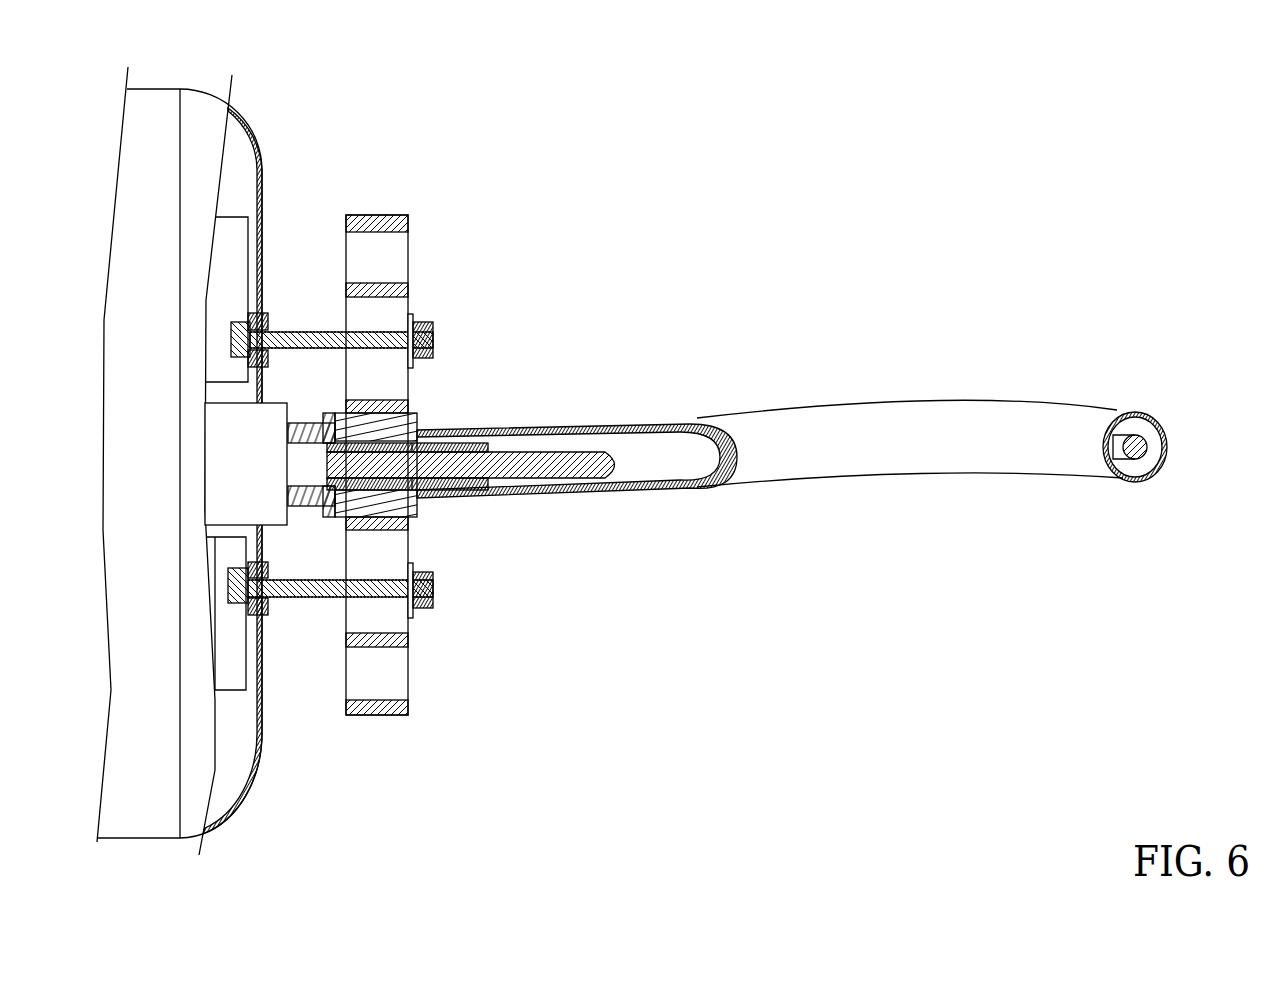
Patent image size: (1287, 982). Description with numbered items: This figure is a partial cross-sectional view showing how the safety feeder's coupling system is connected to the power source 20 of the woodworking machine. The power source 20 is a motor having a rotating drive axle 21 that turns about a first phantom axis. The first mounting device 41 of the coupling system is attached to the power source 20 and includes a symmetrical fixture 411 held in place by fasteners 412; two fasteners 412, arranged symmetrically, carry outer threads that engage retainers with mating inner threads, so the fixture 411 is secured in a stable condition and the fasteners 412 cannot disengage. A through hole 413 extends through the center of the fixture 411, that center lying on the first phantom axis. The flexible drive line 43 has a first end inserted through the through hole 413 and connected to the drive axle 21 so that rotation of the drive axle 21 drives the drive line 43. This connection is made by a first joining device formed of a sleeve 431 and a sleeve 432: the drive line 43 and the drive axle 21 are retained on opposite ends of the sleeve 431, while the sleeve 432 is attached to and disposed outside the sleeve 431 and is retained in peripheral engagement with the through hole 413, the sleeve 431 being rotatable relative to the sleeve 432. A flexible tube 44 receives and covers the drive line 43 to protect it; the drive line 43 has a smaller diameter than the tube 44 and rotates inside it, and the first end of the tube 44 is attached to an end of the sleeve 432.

The power source 20 is at (297, 152).
The drive axle 21 is at (308, 508).
The first mounting device 41 is at (374, 441).
The fixture 411 is at (382, 528).
The fastener 412 is at (313, 332).
The through hole 413 is at (417, 503).
The drive line 43 is at (538, 480).
The sleeve 431 is at (307, 423).
The sleeve 432 is at (420, 416).
The tube 44 is at (832, 457).